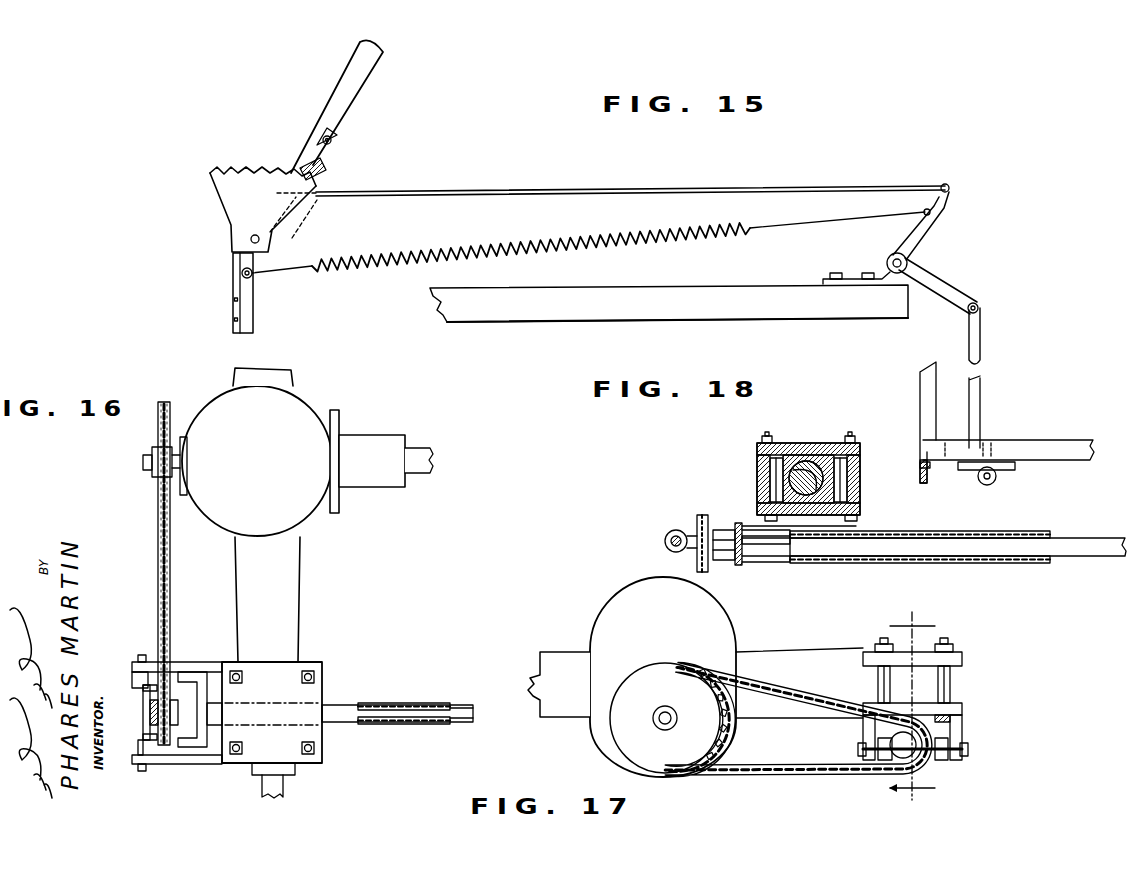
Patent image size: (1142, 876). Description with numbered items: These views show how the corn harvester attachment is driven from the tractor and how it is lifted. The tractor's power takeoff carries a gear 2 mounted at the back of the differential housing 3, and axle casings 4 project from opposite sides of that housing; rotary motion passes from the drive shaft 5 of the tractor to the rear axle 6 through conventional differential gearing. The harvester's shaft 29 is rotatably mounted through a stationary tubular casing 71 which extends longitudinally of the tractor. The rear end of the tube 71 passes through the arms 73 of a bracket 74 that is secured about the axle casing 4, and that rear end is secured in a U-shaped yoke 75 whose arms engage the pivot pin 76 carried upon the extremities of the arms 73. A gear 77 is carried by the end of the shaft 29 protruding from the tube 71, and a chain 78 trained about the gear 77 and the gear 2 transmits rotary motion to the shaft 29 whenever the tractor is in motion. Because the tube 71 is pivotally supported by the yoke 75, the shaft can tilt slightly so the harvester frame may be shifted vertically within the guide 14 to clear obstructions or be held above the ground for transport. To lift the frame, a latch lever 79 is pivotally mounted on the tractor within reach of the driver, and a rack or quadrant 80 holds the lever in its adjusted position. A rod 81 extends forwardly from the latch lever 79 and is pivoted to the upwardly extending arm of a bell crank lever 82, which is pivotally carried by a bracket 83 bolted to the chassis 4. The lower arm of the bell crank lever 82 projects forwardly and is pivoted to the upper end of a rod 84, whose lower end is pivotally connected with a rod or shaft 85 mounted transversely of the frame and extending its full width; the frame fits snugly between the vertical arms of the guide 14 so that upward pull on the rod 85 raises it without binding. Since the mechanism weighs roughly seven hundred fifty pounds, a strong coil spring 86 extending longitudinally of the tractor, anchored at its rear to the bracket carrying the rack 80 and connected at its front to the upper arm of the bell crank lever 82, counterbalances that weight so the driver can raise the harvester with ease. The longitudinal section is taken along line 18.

In FIG. 16, the gear 2 is at (155, 428).
In FIG. 17, the gear 2 is at (630, 735).
In FIG. 16, the differential housing 3 is at (300, 410).
In FIG. 17, the differential housing 3 is at (645, 622).
In FIG. 18, the axle casing 4 is at (800, 452).
In FIG. 16, the axle casing 4 is at (278, 380).
In FIG. 17, the axle casing 4 is at (575, 712).
In FIG. 16, the drive shaft 5 is at (425, 457).
In FIG. 18, the rear axle 6 is at (822, 462).
In FIG. 16, the rear axle 6 is at (258, 792).
In FIG. 17, the rear axle 6 is at (556, 663).
In FIG. 15, the guide 14 is at (918, 390).
In FIG. 15, the section line 18 is at (568, 323).
In FIG. 17, the section line 18 is at (912, 705).
In FIG. 18, the shaft 29 is at (1086, 540).
In FIG. 16, the shaft 29 is at (410, 706).
In FIG. 18, the tubular casing 71 is at (865, 560).
In FIG. 16, the tubular casing 71 is at (356, 700).
In FIG. 18, the arms 73 is at (745, 520).
In FIG. 16, the arms 73 is at (185, 665).
In FIG. 17, the arms 73 is at (866, 732).
In FIG. 18, the bracket 74 is at (860, 528).
In FIG. 16, the bracket 74 is at (315, 660).
In FIG. 17, the bracket 74 is at (930, 705).
In FIG. 18, the yoke 75 is at (748, 566).
In FIG. 16, the yoke 75 is at (207, 680).
In FIG. 17, the yoke 75 is at (952, 762).
In FIG. 18, the pivot pin 76 is at (670, 533).
In FIG. 16, the pivot pin 76 is at (133, 700).
In FIG. 17, the pivot pin 76 is at (932, 740).
In FIG. 16, the gear 77 is at (135, 758).
In FIG. 17, the gear 77 is at (920, 770).
In FIG. 16, the chain 78 is at (160, 530).
In FIG. 17, the chain 78 is at (806, 702).
In FIG. 15, the latch lever 79 is at (350, 62).
In FIG. 15, the rack or quadrant 80 is at (248, 172).
In FIG. 15, the rod 81 is at (707, 194).
In FIG. 15, the bell crank lever 82 is at (940, 240).
In FIG. 15, the bracket 83 is at (890, 277).
In FIG. 15, the rod 84 is at (1000, 368).
In FIG. 15, the rod or shaft 85 is at (1000, 482).
In FIG. 15, the coil spring 86 is at (487, 246).